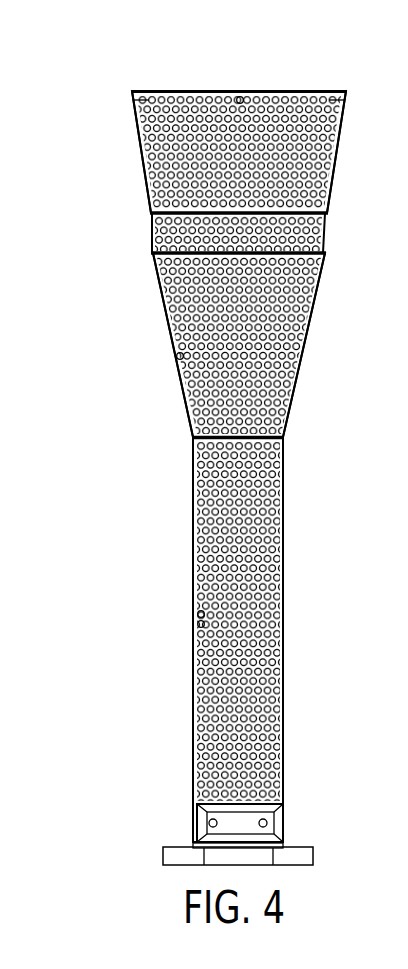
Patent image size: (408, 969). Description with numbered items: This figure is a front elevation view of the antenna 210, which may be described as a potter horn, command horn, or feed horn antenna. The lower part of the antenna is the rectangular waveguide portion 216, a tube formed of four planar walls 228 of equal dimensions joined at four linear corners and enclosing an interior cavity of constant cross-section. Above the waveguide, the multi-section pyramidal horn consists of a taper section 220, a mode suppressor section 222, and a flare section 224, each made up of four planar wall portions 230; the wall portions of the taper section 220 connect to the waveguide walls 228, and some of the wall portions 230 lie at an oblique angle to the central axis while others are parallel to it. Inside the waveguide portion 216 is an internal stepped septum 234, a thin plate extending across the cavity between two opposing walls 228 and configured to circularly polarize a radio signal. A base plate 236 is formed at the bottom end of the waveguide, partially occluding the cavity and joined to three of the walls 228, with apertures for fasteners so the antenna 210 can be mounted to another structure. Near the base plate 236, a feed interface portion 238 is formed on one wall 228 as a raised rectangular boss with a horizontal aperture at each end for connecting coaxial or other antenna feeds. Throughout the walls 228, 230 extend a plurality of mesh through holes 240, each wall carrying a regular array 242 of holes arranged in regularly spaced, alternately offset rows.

The antenna 210 is at (150, 72).
The rectangular waveguide portion 216 is at (285, 480).
The taper section 220 is at (312, 318).
The mode suppressor section 222 is at (329, 230).
The flare section 224 is at (340, 150).
The planar walls 228 is at (285, 565).
The planar wall portions 230 is at (140, 115).
The internal stepped septum 234 is at (192, 515).
The base plate 236 is at (300, 853).
The feed interface portion 238 is at (200, 822).
The holes 240 is at (240, 97).
The array of holes 242 is at (292, 90).